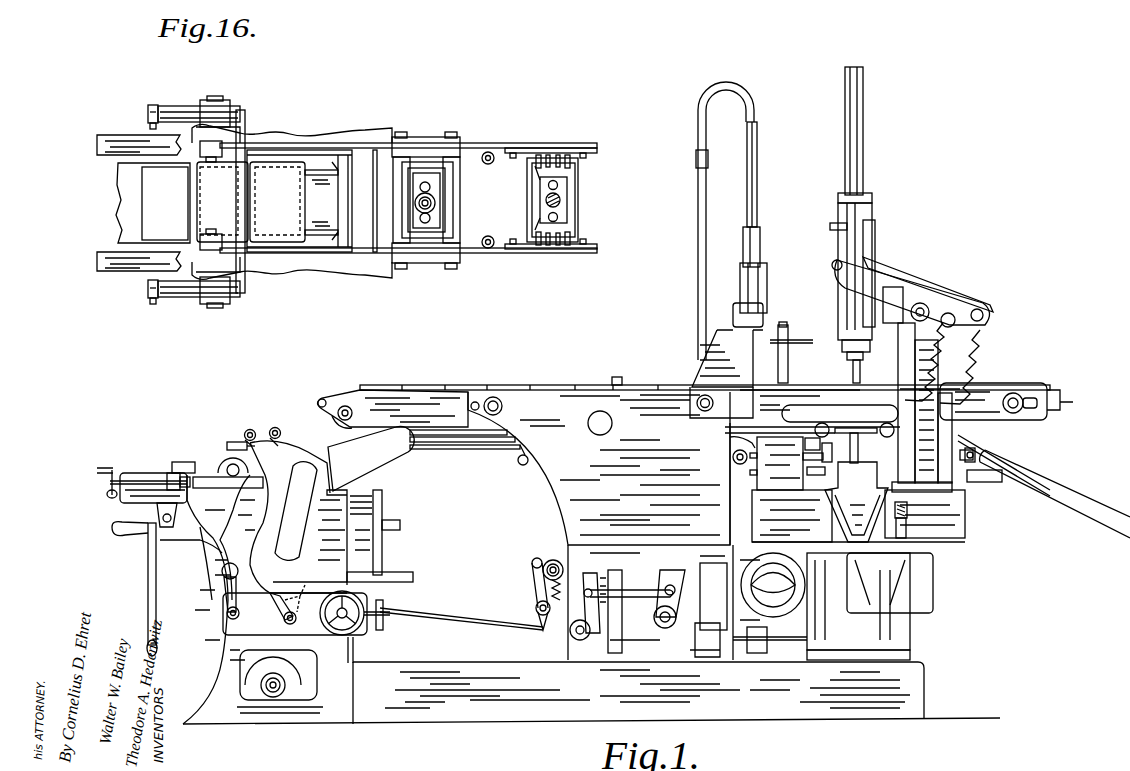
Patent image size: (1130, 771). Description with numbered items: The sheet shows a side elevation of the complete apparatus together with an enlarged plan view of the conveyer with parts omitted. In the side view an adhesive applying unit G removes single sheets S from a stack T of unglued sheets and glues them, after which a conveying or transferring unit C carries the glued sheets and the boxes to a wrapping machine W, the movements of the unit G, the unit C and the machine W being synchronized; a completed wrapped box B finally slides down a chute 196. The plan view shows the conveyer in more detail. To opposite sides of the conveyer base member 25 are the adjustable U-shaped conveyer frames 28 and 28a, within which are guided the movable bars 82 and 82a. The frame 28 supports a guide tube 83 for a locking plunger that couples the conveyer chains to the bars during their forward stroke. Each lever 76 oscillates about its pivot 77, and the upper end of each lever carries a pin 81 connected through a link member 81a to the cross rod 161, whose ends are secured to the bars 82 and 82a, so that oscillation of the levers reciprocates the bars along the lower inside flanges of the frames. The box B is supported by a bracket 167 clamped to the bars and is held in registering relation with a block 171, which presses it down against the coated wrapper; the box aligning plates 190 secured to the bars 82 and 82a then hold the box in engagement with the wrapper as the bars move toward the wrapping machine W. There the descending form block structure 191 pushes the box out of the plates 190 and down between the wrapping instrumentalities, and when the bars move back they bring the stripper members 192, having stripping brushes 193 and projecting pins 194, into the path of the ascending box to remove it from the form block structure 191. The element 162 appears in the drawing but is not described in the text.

In FIG. 16, the cross rod 161 is at (243, 140).
In FIG. 16, the conveyer base member 25 is at (328, 132).
In FIG. 16, the pivot 77 is at (223, 100).
In FIG. 16, the lever 76 is at (188, 106).
In FIG. 16, the pin 81 is at (153, 104).
In FIG. 16, the link member 81a is at (148, 320).
In FIG. 16, the conveyer frame 28a is at (97, 143).
In FIG. 16, the conveyer frame 28 is at (100, 262).
In FIG. 16, the box B is at (140, 218).
In FIG. 1, the box B is at (372, 385).
In FIG. 16, the holder 162 is at (216, 240).
In FIG. 16, the sheet S is at (345, 186).
In FIG. 1, the sheet S is at (395, 488).
In FIG. 16, the bracket 167 is at (326, 230).
In FIG. 16, the box aligning plate 190 is at (428, 140).
In FIG. 16, the block 171 is at (428, 232).
In FIG. 16, the guide tube 83 is at (488, 151).
In FIG. 16, the bar 82a is at (598, 152).
In FIG. 16, the bar 82 is at (598, 254).
In FIG. 16, the stripper member 192 is at (580, 165).
In FIG. 16, the form block structure 191 is at (538, 217).
In FIG. 16, the stripping brush 193 is at (552, 154).
In FIG. 16, the projecting pin 194 is at (538, 152).
In FIG. 1, the adhesive applying unit G is at (282, 492).
In FIG. 1, the conveying unit C is at (599, 499).
In FIG. 1, the stack T is at (400, 516).
In FIG. 1, the wrapping machine W is at (909, 304).
In FIG. 1, the chute 196 is at (1048, 478).